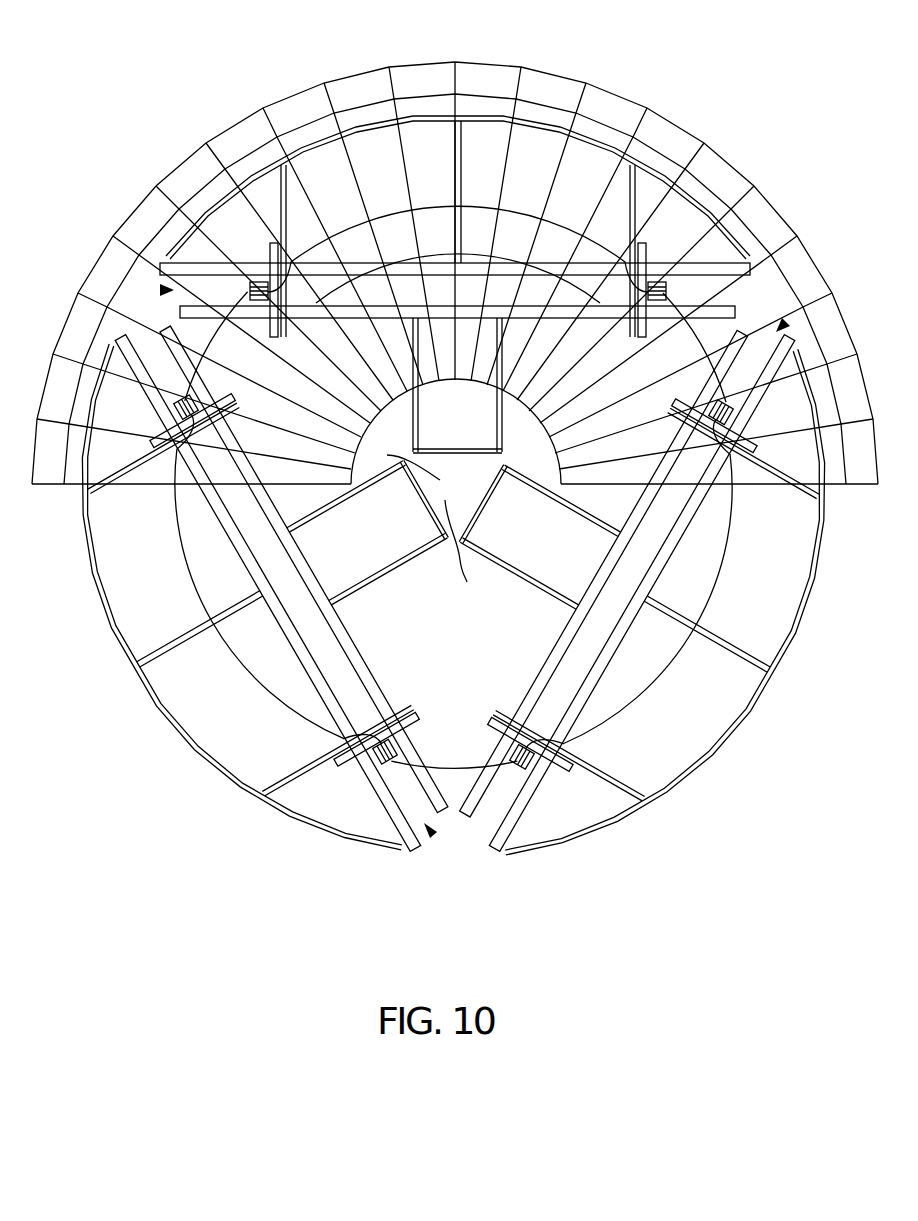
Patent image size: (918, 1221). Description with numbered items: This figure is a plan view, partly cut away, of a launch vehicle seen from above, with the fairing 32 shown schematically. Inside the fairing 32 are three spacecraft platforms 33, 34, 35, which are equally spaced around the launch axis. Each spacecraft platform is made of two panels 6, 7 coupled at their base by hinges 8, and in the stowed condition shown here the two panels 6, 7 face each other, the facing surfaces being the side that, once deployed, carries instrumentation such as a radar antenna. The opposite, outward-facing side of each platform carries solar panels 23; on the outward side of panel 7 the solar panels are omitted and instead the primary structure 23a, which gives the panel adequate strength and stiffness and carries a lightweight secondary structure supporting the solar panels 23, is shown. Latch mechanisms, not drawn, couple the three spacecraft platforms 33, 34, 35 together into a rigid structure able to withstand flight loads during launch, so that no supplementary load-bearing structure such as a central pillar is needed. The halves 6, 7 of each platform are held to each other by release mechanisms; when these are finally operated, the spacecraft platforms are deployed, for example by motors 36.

The fairing 32 is at (432, 66).
The solar panels 23 is at (545, 128).
The primary structure 23a is at (446, 458).
The panel 6 is at (548, 262).
The panel 7 is at (447, 378).
The hinges 8 is at (270, 290).
The spacecraft platform 33 is at (168, 290).
The spacecraft platform 34 is at (431, 835).
The spacecraft platform 35 is at (782, 326).
The motors 36 is at (250, 290).